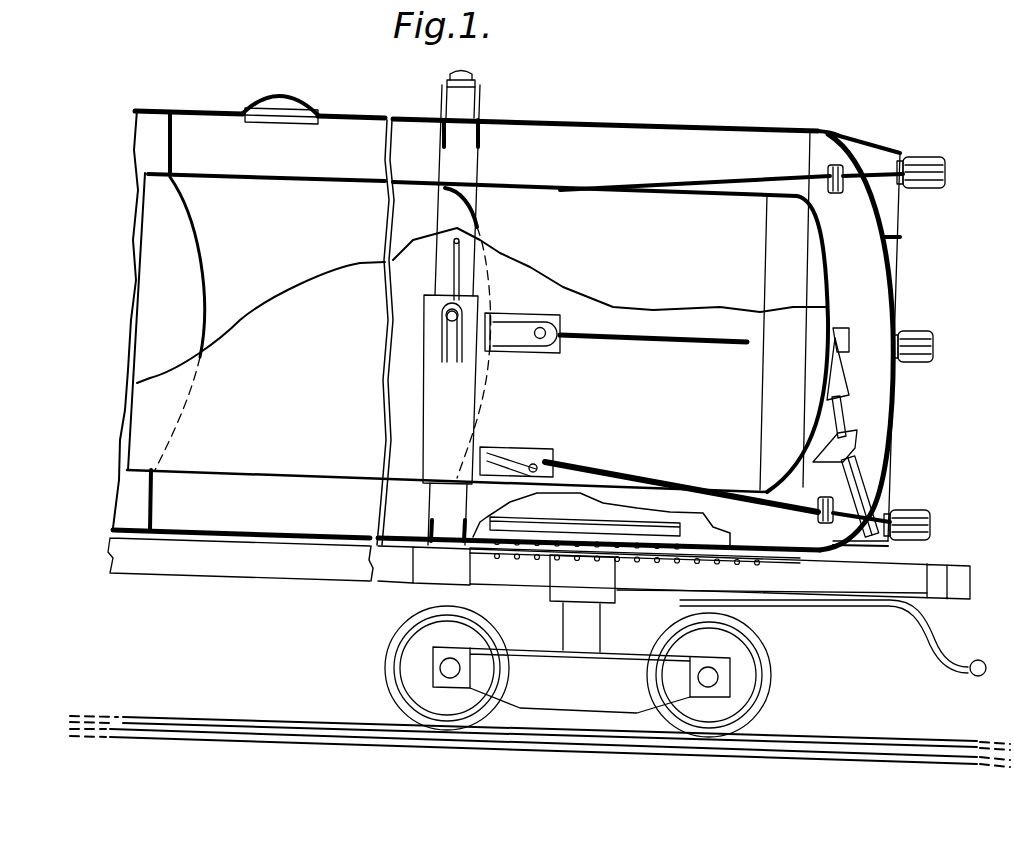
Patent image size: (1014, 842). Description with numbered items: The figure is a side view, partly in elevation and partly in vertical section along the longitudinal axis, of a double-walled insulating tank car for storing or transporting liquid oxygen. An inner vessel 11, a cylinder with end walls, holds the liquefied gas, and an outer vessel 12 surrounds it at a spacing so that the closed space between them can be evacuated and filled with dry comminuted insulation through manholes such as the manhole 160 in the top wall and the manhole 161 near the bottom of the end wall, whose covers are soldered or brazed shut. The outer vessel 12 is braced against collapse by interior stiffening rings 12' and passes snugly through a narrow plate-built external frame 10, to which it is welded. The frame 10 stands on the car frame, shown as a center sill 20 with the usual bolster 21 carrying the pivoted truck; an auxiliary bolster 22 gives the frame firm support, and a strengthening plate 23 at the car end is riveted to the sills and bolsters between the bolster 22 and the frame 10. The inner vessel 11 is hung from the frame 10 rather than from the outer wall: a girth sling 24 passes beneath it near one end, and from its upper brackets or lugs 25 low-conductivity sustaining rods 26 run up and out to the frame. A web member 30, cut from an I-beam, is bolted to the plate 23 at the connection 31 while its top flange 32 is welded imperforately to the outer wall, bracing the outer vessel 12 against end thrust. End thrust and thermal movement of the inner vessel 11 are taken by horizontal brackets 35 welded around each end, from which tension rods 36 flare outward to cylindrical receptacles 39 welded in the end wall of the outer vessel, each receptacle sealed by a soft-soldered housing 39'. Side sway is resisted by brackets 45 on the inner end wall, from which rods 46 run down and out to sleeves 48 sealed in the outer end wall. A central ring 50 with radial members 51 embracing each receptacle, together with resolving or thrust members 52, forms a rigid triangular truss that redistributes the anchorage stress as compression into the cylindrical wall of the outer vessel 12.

The external frame 10 is at (480, 95).
The inner vessel 11 is at (266, 161).
The outer vessel 12 is at (503, 322).
The stiffening ring 12' is at (309, 312).
The center sill 20 is at (221, 585).
The bolster 21 is at (603, 595).
The auxiliary bolster 22 is at (428, 572).
The strengthening plate 23 is at (780, 566).
The girth member or sling 24 is at (476, 408).
The bracket or lug 25 is at (465, 310).
The sustaining rod or cable 26 is at (450, 263).
The web member 30 is at (695, 533).
The bolted connection 31 is at (520, 555).
The top flange 32 is at (547, 518).
The bracket or lug 35 is at (540, 354).
The tension rod or cable 36 is at (765, 183).
The cylindrical receptacle 39 is at (834, 344).
The housing 39' is at (923, 329).
The bracket 45 is at (851, 387).
The rod or cable 46 is at (850, 416).
The sleeve 48 is at (869, 445).
The central ring 50 is at (901, 240).
The radial member 51 is at (903, 217).
The resolving or thrust member 52 is at (863, 143).
The manhole 160 is at (283, 97).
The manhole 161 is at (886, 474).